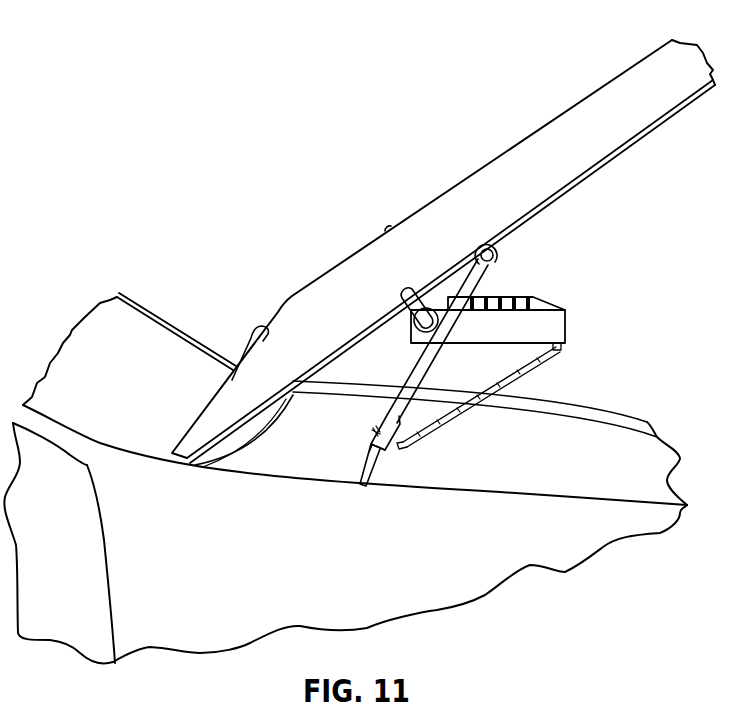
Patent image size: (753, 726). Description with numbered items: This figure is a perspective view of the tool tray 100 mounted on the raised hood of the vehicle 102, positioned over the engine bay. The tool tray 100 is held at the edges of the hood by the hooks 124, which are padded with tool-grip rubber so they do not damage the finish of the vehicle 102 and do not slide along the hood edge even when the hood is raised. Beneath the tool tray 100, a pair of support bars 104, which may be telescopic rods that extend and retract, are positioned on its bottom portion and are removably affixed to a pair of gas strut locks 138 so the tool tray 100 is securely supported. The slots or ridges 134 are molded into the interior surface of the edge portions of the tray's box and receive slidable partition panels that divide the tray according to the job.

The tool tray 100 is at (548, 298).
The vehicle 102 is at (158, 343).
The support bars 104 is at (558, 352).
The hooks 124 is at (413, 297).
The slots or ridges 134 is at (522, 295).
The gas strut locks 138 is at (420, 380).